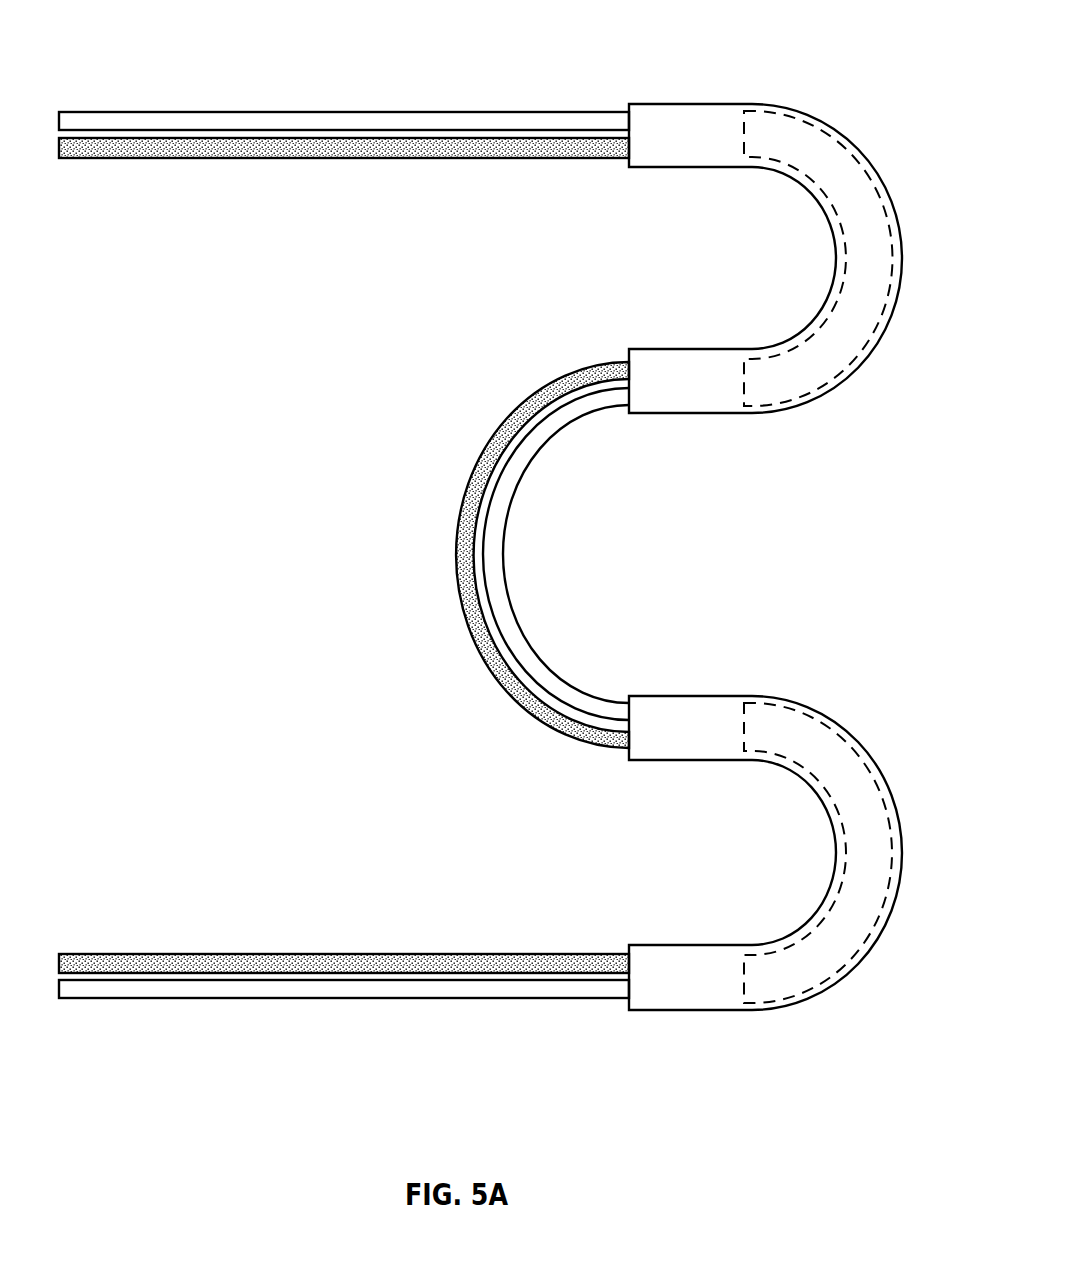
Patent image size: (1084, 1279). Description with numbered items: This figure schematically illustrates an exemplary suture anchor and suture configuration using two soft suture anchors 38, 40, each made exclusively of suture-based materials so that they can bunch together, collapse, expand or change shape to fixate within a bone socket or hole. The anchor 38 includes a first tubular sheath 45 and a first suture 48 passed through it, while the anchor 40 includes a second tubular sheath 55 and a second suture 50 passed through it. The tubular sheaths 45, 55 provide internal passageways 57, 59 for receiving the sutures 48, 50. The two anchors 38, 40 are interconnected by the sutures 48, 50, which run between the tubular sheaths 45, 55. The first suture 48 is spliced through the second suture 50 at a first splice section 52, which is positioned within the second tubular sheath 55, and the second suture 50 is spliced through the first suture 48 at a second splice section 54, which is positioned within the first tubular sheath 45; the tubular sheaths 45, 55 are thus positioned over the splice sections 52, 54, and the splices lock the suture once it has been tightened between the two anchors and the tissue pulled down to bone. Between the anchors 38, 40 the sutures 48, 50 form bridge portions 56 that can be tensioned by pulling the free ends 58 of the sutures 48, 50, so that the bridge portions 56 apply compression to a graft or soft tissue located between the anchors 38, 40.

The anchor 38 is at (789, 222).
The anchor 40 is at (792, 853).
The first tubular sheath 45 is at (743, 102).
The first suture 48 is at (233, 158).
The second suture 50 is at (567, 1000).
The first splice section 52 is at (877, 862).
The second splice section 54 is at (862, 197).
The second tubular sheath 55 is at (857, 960).
The bridge portions 56 is at (510, 521).
The internal passageway 57 is at (872, 326).
The free ends 58 is at (110, 42).
The internal passageway 59 is at (830, 732).